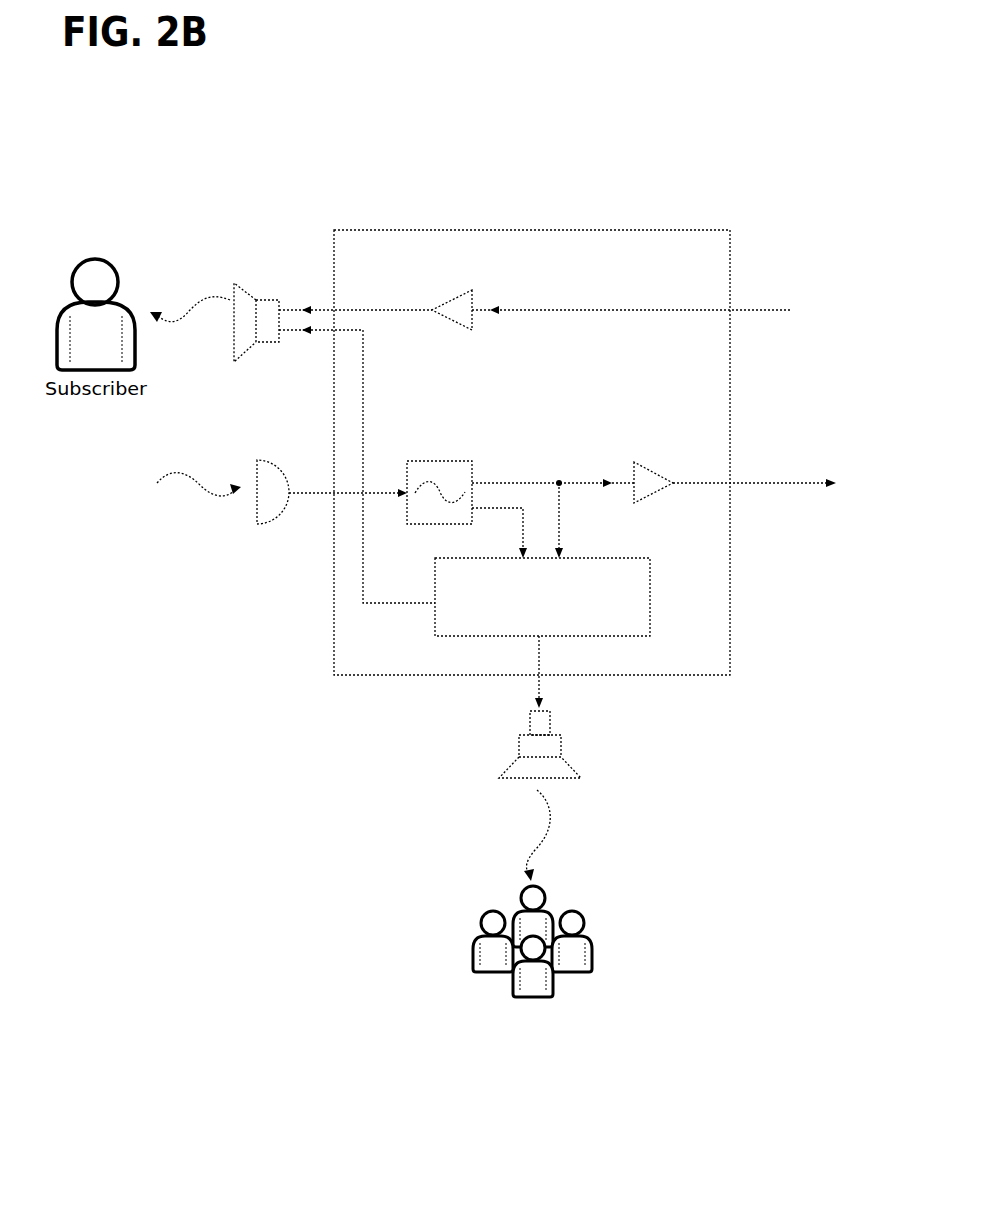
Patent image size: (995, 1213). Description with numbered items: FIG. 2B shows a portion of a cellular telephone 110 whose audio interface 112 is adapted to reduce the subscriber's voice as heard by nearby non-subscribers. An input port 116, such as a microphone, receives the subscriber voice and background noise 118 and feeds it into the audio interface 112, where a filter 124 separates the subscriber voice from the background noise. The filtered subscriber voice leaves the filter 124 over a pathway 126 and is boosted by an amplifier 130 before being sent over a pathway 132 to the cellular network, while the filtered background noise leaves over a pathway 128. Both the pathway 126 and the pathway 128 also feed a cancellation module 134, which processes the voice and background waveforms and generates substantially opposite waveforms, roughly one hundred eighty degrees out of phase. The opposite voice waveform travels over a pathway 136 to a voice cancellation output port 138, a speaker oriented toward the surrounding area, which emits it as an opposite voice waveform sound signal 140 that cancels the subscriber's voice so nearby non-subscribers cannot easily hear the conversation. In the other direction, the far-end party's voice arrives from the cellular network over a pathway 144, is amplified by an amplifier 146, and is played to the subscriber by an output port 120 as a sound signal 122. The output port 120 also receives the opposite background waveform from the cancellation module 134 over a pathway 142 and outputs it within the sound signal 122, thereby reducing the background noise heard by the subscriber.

The cellular telephone 110 is at (281, 1015).
The audio interface 112 is at (681, 673).
The input port 116 is at (273, 462).
The subscriber voice and background noise 118 is at (192, 462).
The output port 120 is at (233, 283).
The sound signal 122 is at (192, 292).
The filter 124 is at (443, 461).
The pathway 126 is at (518, 483).
The pathway 128 is at (510, 508).
The amplifier 130 is at (650, 470).
The pathway 132 is at (793, 480).
The cancellation module 134 is at (653, 595).
The pathway 136 is at (538, 660).
The voice cancellation output port 138 is at (562, 757).
The opposite voice waveform sound signal 140 is at (520, 827).
The pathway 142 is at (363, 362).
The pathway 144 is at (766, 310).
The amplifier 146 is at (442, 303).